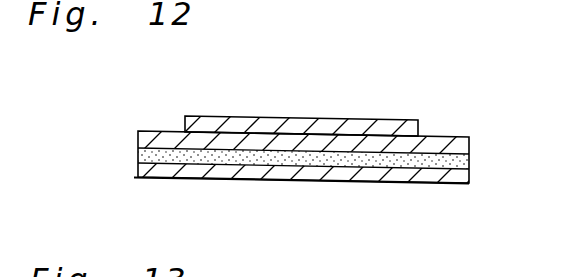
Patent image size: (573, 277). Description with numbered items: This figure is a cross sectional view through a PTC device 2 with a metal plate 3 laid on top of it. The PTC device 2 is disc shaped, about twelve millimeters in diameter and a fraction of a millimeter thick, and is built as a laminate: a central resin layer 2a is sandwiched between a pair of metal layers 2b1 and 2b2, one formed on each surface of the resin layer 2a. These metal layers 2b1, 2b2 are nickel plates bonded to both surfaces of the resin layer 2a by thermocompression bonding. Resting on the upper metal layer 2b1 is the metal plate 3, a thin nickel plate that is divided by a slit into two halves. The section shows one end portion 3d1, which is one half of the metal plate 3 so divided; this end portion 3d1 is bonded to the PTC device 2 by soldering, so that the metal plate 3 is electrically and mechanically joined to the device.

The PTC device 2 is at (314, 201).
The resin layer 2a is at (383, 157).
The metal layer 2b1 is at (315, 140).
The metal layer 2b2 is at (307, 250).
The metal plate 3 is at (357, 90).
The one end portion 3d1 is at (253, 125).